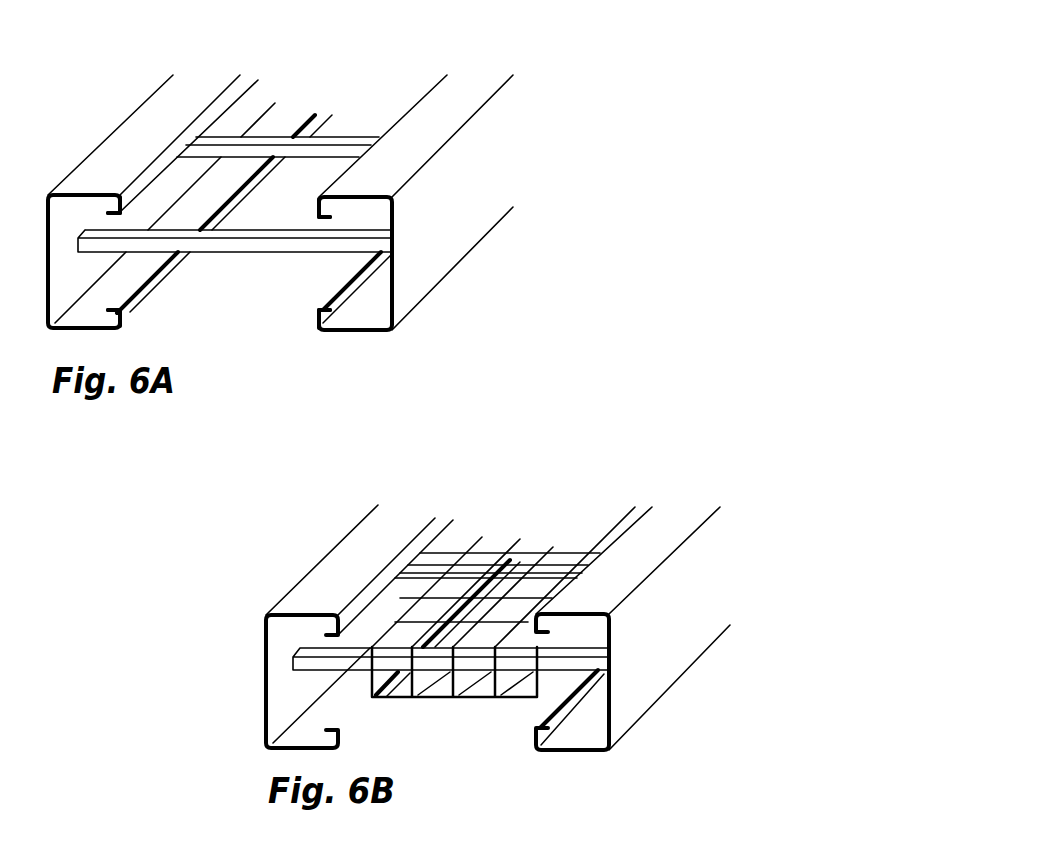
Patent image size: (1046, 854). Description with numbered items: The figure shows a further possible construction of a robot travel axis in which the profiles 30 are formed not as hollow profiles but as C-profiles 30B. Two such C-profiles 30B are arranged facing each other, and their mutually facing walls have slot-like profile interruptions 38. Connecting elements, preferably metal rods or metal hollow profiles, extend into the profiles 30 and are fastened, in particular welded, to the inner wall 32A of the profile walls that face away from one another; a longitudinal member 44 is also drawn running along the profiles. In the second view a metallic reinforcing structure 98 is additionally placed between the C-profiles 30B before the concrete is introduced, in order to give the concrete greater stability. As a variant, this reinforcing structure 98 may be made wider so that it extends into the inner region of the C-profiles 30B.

In FIG. 6A, the profiles 30 is at (215, 78).
In FIG. 6B, the profiles 30 is at (359, 626).
In FIG. 6A, the C-profiles 30B is at (470, 97).
In FIG. 6B, the C-profiles 30B is at (633, 628).
In FIG. 6A, the inner wall 32A is at (93, 210).
In FIG. 6A, the slot-like profile interruptions 38 is at (120, 280).
In FIG. 6A, the longitudinal rod 44 is at (318, 128).
In FIG. 6B, the longitudinal rod 44 is at (490, 652).
In FIG. 6B, the metallic reinforcing structure 98 is at (443, 697).